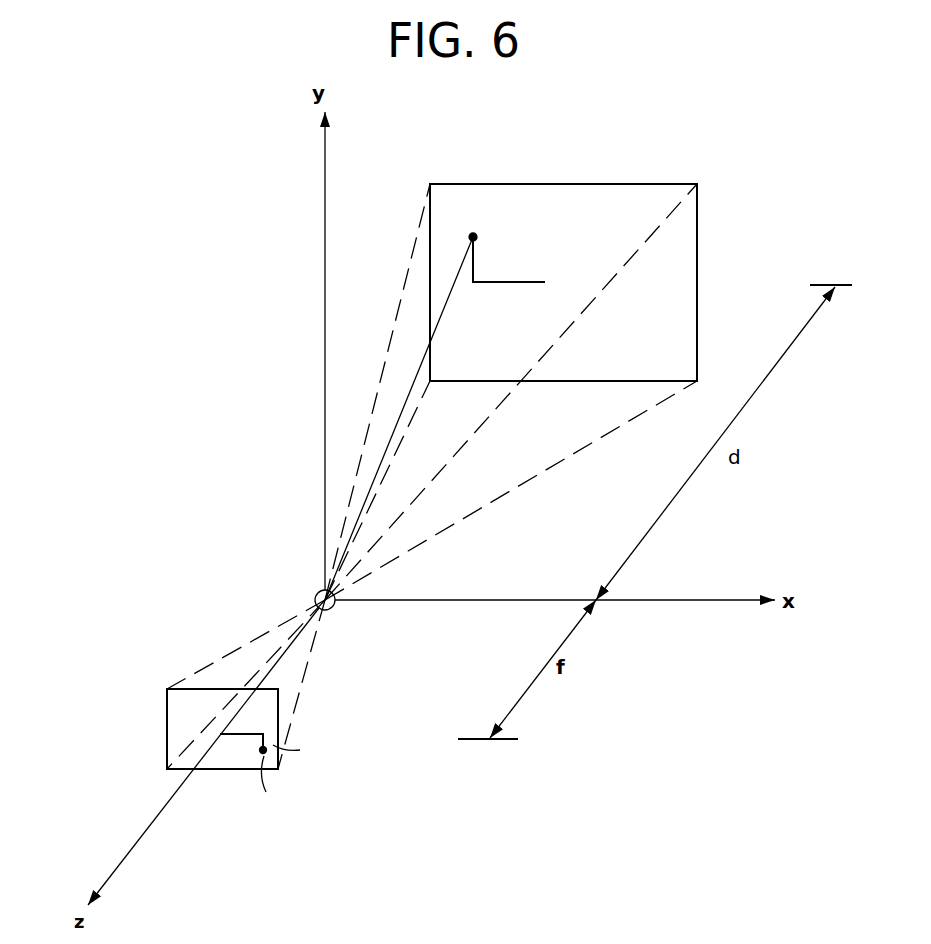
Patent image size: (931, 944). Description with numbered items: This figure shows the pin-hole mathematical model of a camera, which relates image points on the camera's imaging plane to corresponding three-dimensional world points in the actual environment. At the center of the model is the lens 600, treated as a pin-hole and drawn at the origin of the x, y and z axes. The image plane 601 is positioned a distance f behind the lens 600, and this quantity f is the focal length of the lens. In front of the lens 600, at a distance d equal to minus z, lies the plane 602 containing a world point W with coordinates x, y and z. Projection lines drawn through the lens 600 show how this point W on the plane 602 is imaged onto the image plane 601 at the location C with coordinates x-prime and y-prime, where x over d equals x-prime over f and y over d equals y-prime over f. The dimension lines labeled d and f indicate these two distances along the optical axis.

The lens 600 is at (317, 591).
The image plane 601 is at (167, 722).
The plane 602 is at (549, 183).